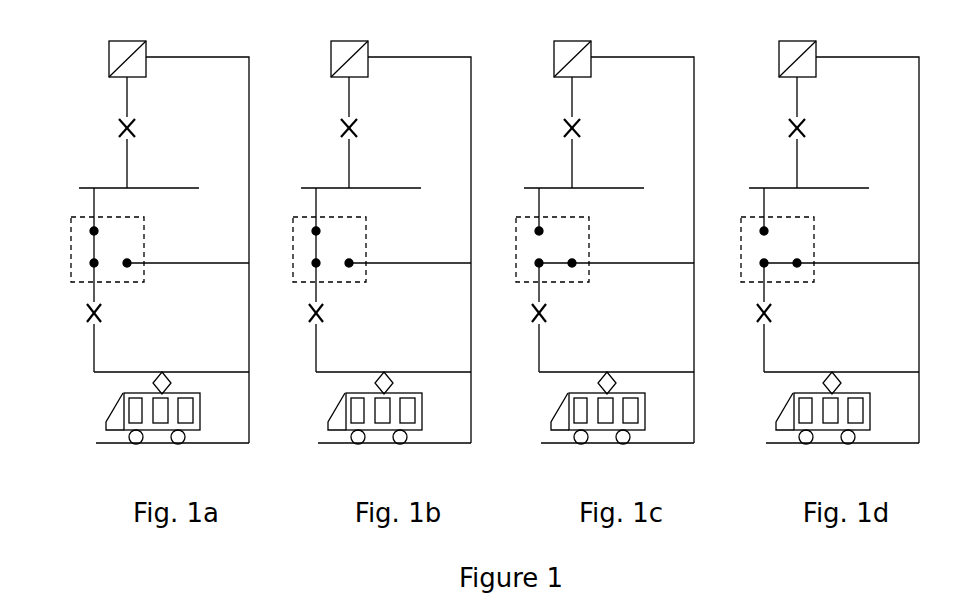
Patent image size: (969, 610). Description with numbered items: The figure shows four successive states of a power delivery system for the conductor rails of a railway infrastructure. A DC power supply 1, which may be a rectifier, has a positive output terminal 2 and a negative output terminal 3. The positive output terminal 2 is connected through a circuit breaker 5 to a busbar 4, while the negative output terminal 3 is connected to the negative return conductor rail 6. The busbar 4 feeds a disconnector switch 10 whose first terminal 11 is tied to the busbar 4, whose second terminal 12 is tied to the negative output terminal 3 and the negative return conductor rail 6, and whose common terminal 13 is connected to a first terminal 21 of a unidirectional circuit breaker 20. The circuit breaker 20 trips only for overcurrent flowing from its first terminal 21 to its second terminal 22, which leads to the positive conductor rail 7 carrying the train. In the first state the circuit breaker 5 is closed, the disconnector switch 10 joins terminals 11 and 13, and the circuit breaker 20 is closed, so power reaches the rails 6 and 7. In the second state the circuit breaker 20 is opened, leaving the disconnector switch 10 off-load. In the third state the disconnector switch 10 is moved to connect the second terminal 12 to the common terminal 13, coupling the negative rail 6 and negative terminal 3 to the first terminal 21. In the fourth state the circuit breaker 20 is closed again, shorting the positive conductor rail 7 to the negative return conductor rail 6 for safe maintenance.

In FIG. 1A, the DC power supply 1 is at (109, 55).
In FIG. 1B, the DC power supply 1 is at (341, 48).
In FIG. 1C, the DC power supply 1 is at (564, 48).
In FIG. 1D, the DC power supply 1 is at (789, 48).
In FIG. 1A, the positive output terminal 2 is at (125, 78).
In FIG. 1B, the positive output terminal 2 is at (339, 73).
In FIG. 1C, the positive output terminal 2 is at (562, 73).
In FIG. 1D, the positive output terminal 2 is at (787, 73).
In FIG. 1A, the negative output terminal 3 is at (147, 55).
In FIG. 1B, the negative output terminal 3 is at (419, 228).
In FIG. 1C, the negative output terminal 3 is at (642, 228).
In FIG. 1D, the negative output terminal 3 is at (867, 228).
In FIG. 1A, the busbar 4 is at (192, 188).
In FIG. 1B, the busbar 4 is at (378, 167).
In FIG. 1C, the busbar 4 is at (601, 167).
In FIG. 1D, the busbar 4 is at (826, 167).
In FIG. 1A, the circuit breaker 5 is at (118, 125).
In FIG. 1B, the circuit breaker 5 is at (353, 132).
In FIG. 1C, the circuit breaker 5 is at (576, 132).
In FIG. 1D, the circuit breaker 5 is at (801, 132).
In FIG. 1A, the negative return conductor rail 6 is at (230, 445).
In FIG. 1B, the negative return conductor rail 6 is at (402, 466).
In FIG. 1C, the negative return conductor rail 6 is at (625, 466).
In FIG. 1D, the negative return conductor rail 6 is at (850, 466).
In FIG. 1A, the positive conductor rail 7 is at (222, 375).
In FIG. 1B, the positive conductor rail 7 is at (393, 380).
In FIG. 1C, the positive conductor rail 7 is at (616, 380).
In FIG. 1D, the positive conductor rail 7 is at (841, 380).
In FIG. 1A, the disconnector switch 10 is at (71, 233).
In FIG. 1B, the disconnector switch 10 is at (302, 245).
In FIG. 1C, the disconnector switch 10 is at (525, 245).
In FIG. 1D, the disconnector switch 10 is at (750, 245).
In FIG. 1A, the first terminal 11 is at (97, 229).
In FIG. 1B, the first terminal 11 is at (345, 212).
In FIG. 1C, the first terminal 11 is at (568, 212).
In FIG. 1D, the first terminal 11 is at (793, 212).
In FIG. 1A, the second terminal 12 is at (129, 260).
In FIG. 1B, the second terminal 12 is at (408, 239).
In FIG. 1C, the second terminal 12 is at (631, 239).
In FIG. 1D, the second terminal 12 is at (856, 239).
In FIG. 1A, the common terminal 13 is at (94, 263).
In FIG. 1B, the common terminal 13 is at (359, 283).
In FIG. 1C, the common terminal 13 is at (582, 283).
In FIG. 1D, the common terminal 13 is at (807, 283).
In FIG. 1A, the unidirectional circuit breaker 20 is at (87, 315).
In FIG. 1B, the unidirectional circuit breaker 20 is at (314, 320).
In FIG. 1C, the unidirectional circuit breaker 20 is at (537, 320).
In FIG. 1D, the unidirectional circuit breaker 20 is at (769, 320).
In FIG. 1A, the first terminal 21 is at (94, 288).
In FIG. 1B, the first terminal 21 is at (281, 285).
In FIG. 1C, the first terminal 21 is at (504, 285).
In FIG. 1D, the first terminal 21 is at (729, 285).
In FIG. 1A, the second terminal 22 is at (94, 367).
In FIG. 1B, the second terminal 22 is at (295, 351).
In FIG. 1C, the second terminal 22 is at (518, 351).
In FIG. 1D, the second terminal 22 is at (743, 351).